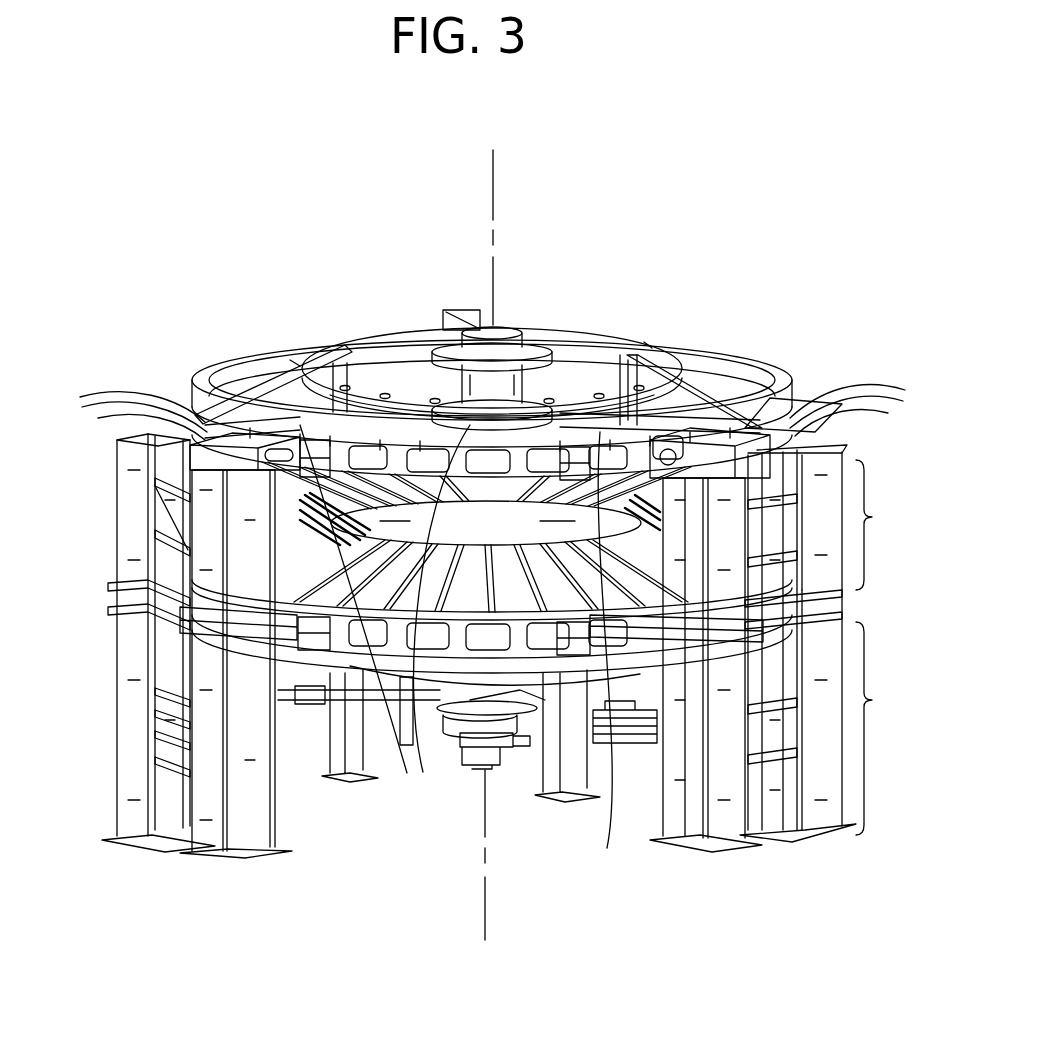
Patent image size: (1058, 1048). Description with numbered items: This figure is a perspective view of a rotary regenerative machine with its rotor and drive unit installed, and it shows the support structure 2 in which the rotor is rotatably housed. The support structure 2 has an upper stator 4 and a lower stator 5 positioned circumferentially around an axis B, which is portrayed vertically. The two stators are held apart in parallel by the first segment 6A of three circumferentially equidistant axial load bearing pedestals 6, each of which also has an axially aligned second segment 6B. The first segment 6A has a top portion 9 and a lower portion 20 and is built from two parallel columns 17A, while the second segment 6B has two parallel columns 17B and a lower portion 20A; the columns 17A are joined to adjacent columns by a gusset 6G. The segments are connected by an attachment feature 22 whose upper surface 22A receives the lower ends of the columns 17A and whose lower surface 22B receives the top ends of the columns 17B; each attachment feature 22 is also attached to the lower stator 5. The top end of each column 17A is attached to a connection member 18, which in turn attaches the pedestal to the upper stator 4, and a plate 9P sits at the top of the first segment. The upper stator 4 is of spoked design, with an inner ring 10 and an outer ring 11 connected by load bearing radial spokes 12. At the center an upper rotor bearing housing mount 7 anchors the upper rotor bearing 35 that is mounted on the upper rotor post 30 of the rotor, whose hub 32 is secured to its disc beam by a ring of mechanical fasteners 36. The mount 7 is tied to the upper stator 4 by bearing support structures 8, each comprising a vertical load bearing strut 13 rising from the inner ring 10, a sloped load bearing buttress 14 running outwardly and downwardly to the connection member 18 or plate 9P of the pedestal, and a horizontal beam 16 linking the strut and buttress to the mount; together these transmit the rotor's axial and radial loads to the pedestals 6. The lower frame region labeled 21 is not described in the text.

The axis B is at (493, 188).
The support structure 2 is at (908, 467).
The upper stator 4 is at (722, 340).
The lower stator 5 is at (302, 692).
The pedestal 6 is at (94, 507).
The first segment 6A is at (851, 521).
The second segment 6B is at (850, 712).
The gusset 6G is at (155, 480).
The upper rotor bearing housing mount 7 is at (593, 326).
The bearing support structure 8 is at (489, 314).
The top portion 9 is at (114, 450).
The plate 9P is at (173, 407).
The inner ring 10 is at (417, 362).
The outer ring 11 is at (772, 405).
The radial spokes 12 is at (766, 354).
The load bearing strut 13 is at (540, 755).
The load bearing buttress 14 is at (257, 387).
The beam 16 is at (433, 330).
The parallel columns 17A is at (110, 533).
The parallel columns 17B is at (107, 783).
The connection member 18 is at (500, 400).
The lower portion 20 is at (118, 564).
The lower portion 20A is at (830, 822).
The lower frame 21 is at (896, 731).
The attachment feature 22 is at (108, 596).
The upper surface 22A is at (155, 691).
The lower surface 22B is at (155, 733).
The upper rotor post 30 is at (505, 375).
The hub 32 is at (497, 535).
The upper rotor bearing 35 is at (505, 332).
The mechanical fasteners 36 is at (368, 397).